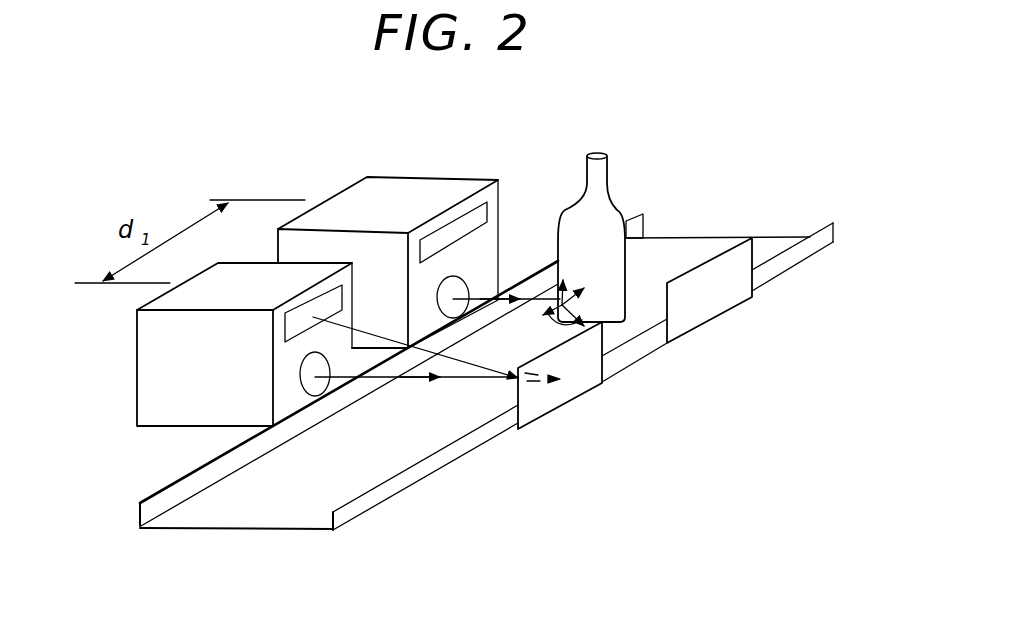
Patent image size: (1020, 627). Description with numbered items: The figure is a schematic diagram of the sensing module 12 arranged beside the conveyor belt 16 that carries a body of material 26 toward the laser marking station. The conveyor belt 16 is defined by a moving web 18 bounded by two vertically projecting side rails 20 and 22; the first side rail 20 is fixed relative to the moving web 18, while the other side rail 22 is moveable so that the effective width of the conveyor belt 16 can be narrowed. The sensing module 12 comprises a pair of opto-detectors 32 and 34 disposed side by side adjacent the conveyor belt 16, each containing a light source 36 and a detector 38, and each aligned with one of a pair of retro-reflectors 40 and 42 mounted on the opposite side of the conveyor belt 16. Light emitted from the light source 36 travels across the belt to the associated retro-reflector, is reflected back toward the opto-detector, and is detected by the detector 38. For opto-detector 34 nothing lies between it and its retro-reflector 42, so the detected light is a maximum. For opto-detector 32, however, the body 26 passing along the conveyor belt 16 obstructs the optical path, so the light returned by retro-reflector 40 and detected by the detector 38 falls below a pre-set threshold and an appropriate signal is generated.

The sensing module 12 is at (268, 177).
The conveyor belt 16 is at (177, 537).
The moving web 18 is at (278, 510).
The first side rail 20 is at (140, 510).
The second side rail 22 is at (350, 520).
The container (bottle) 26 is at (598, 202).
The opto-detector 32 is at (393, 188).
The opto-detector 34 is at (148, 350).
The light source 36 is at (318, 395).
The detector 38 is at (478, 218).
The retro-reflector 40 is at (718, 298).
The retro-reflector 42 is at (565, 392).